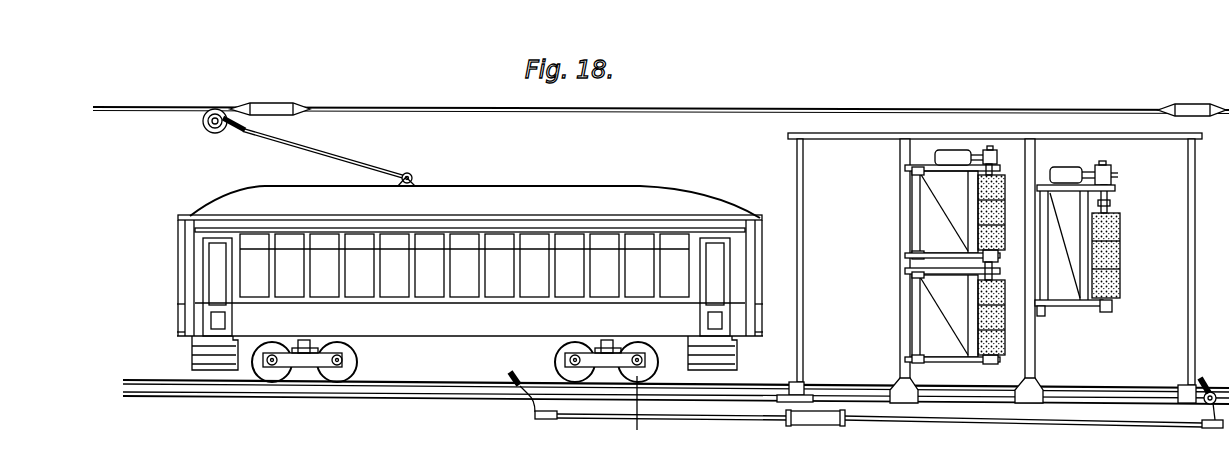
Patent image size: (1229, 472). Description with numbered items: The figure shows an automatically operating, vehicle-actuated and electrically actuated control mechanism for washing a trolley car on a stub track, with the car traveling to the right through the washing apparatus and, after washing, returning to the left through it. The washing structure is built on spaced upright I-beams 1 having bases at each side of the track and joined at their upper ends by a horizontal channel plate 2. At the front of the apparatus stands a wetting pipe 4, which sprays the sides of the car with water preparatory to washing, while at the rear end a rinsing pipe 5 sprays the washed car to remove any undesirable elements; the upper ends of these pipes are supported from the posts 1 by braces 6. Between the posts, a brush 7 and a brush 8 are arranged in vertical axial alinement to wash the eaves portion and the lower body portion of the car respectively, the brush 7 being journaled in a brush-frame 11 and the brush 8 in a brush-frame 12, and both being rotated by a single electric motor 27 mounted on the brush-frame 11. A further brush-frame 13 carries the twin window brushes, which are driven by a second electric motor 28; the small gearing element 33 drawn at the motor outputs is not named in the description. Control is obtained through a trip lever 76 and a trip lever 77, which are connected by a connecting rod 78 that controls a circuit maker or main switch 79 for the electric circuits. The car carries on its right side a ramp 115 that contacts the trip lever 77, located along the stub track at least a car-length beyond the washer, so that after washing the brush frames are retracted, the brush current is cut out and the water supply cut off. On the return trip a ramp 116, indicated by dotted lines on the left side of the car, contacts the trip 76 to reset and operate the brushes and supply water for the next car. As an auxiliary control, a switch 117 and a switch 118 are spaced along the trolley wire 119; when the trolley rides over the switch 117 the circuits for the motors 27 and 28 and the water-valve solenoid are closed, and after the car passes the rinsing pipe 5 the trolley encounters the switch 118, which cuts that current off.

The upright I-beam 1 is at (900, 208).
The channel plate 2 is at (958, 132).
The wetting pipe 4 is at (797, 181).
The rinsing pipe 5 is at (1195, 199).
The brace 6 is at (995, 128).
The brush 7 is at (998, 212).
The brush 8 is at (997, 317).
The brush-frame 11 is at (952, 214).
The brush-frame 12 is at (952, 313).
The brush-frame 13 is at (1075, 250).
The electric motor 27 is at (962, 150).
The electric motor 28 is at (1075, 161).
The gear box 33 is at (1132, 172).
The trip lever 76 is at (511, 369).
The trip lever 77 is at (1212, 380).
The connecting rod 78 is at (962, 426).
The circuit maker 79 is at (815, 433).
The ramp 115 is at (645, 414).
The ramp 116 is at (580, 394).
The switch 117 is at (287, 87).
The switch 118 is at (1190, 103).
The trolley wire 119 is at (734, 105).